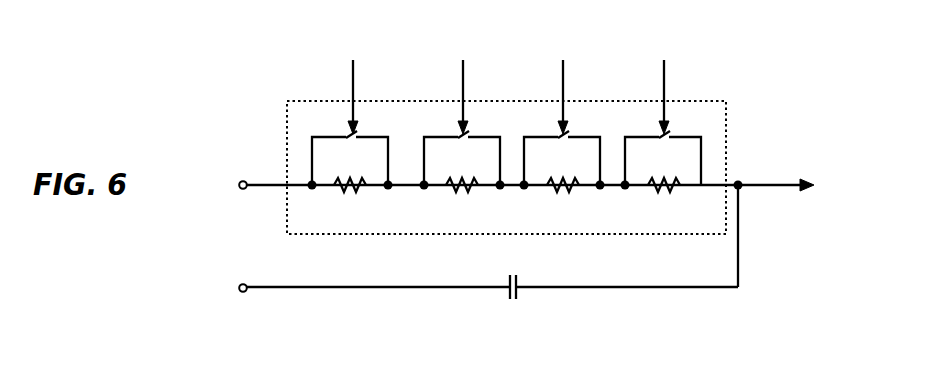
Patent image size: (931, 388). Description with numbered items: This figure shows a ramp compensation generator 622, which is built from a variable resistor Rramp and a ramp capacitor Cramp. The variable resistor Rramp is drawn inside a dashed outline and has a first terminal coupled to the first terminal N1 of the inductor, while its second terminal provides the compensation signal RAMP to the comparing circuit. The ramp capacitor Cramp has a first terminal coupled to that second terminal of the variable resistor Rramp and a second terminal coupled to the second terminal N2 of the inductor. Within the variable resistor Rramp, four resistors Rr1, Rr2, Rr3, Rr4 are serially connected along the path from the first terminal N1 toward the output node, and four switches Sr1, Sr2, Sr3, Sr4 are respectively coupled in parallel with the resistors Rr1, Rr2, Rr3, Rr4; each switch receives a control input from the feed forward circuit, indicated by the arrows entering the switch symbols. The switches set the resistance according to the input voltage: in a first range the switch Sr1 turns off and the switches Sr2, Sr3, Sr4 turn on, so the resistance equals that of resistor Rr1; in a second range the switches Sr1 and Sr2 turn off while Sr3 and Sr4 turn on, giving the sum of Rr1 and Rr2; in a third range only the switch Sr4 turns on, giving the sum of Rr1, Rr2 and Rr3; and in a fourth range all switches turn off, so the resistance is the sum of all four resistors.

The ramp compensation generator 622 is at (796, 101).
The variable resistor Rramp is at (300, 240).
The ramp capacitor Cramp is at (513, 297).
The compensation signal RAMP is at (776, 174).
The first terminal of the inductor N1 is at (220, 185).
The second terminal of the inductor N2 is at (220, 288).
The switch Sr1 is at (350, 122).
The switch Sr2 is at (462, 122).
The switch Sr3 is at (562, 122).
The switch Sr4 is at (663, 122).
The resistor Rr1 is at (350, 197).
The resistor Rr2 is at (462, 197).
The resistor Rr3 is at (564, 197).
The resistor Rr4 is at (664, 197).